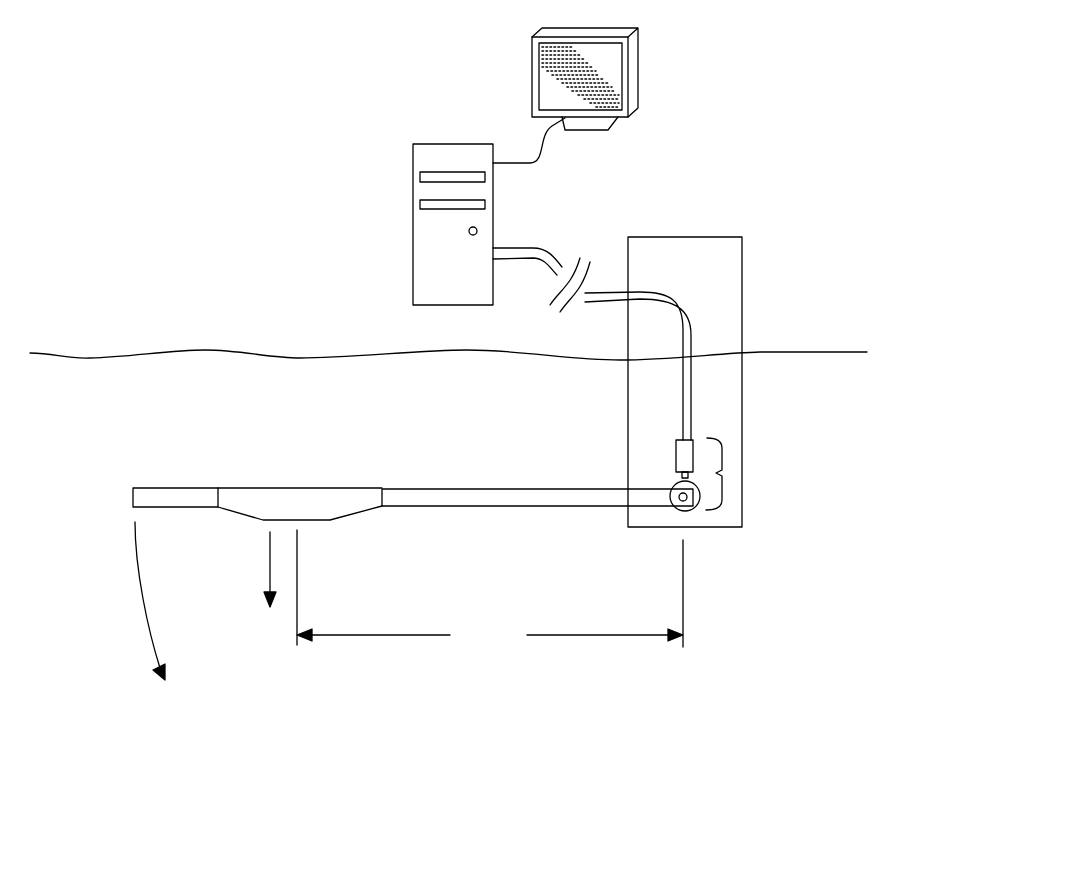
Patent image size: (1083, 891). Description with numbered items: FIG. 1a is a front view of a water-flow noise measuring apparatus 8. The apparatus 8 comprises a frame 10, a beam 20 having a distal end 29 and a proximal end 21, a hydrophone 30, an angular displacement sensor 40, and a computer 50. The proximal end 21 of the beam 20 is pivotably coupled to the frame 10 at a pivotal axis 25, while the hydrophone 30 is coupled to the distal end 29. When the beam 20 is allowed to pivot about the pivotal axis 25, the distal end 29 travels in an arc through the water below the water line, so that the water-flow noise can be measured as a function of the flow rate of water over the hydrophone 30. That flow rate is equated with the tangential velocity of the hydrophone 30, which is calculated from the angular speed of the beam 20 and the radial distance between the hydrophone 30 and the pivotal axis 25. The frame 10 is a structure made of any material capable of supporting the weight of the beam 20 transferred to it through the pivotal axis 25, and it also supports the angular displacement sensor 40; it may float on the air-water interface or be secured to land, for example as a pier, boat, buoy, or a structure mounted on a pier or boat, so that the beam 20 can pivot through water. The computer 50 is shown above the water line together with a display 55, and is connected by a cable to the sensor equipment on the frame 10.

The water-flow noise measuring apparatus 8 is at (190, 130).
The frame 10 is at (742, 295).
The beam 20 is at (420, 488).
The proximal end 21 is at (700, 510).
The pivotal axis 25 is at (680, 487).
The distal end 29 is at (118, 498).
The hydrophone 30 is at (283, 487).
The angular displacement sensor 40 is at (722, 473).
The computer 50 is at (413, 250).
The display monitor 55 is at (638, 102).